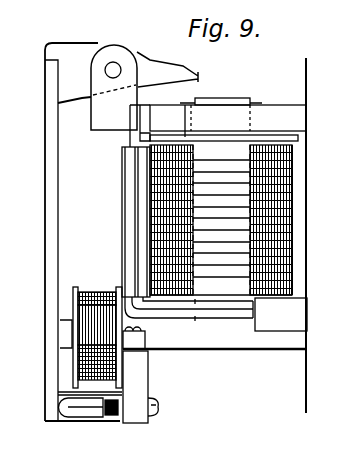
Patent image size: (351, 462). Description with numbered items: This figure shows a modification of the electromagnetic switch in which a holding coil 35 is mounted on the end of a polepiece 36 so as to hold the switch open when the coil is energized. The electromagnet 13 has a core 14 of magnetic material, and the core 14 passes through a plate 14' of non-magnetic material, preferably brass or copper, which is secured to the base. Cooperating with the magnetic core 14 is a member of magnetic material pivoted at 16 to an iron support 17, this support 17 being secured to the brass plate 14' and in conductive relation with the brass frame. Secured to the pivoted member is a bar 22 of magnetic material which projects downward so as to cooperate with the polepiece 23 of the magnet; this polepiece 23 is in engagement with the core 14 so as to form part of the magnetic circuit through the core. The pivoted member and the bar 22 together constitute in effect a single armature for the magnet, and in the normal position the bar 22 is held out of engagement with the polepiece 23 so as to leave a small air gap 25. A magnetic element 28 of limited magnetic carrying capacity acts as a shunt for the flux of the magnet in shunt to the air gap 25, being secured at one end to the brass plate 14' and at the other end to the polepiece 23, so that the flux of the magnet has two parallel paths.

The electromagnet 13 is at (277, 192).
The core 14 is at (223, 88).
The plate 14' is at (218, 126).
The pivot 16 is at (105, 69).
The iron support 17 is at (144, 87).
The bar 22 is at (47, 152).
The polepiece 23 is at (280, 342).
The air gap 25 is at (62, 332).
The magnetic element 28 is at (128, 143).
The holding coil 35 is at (97, 290).
The polepiece 36 is at (185, 342).